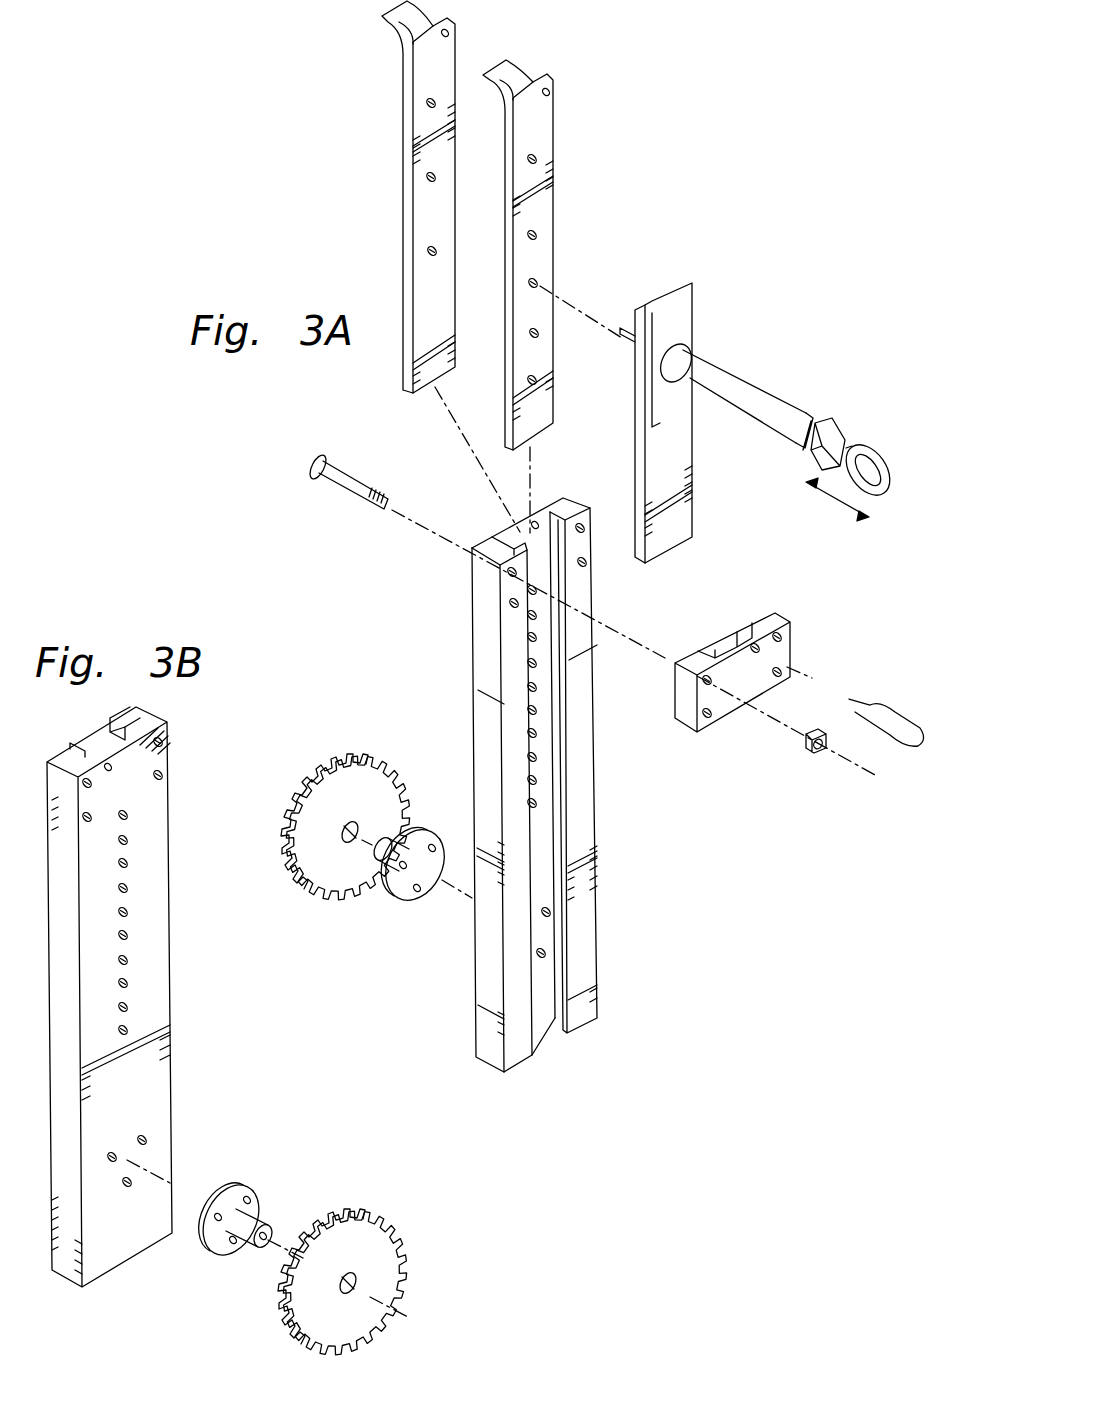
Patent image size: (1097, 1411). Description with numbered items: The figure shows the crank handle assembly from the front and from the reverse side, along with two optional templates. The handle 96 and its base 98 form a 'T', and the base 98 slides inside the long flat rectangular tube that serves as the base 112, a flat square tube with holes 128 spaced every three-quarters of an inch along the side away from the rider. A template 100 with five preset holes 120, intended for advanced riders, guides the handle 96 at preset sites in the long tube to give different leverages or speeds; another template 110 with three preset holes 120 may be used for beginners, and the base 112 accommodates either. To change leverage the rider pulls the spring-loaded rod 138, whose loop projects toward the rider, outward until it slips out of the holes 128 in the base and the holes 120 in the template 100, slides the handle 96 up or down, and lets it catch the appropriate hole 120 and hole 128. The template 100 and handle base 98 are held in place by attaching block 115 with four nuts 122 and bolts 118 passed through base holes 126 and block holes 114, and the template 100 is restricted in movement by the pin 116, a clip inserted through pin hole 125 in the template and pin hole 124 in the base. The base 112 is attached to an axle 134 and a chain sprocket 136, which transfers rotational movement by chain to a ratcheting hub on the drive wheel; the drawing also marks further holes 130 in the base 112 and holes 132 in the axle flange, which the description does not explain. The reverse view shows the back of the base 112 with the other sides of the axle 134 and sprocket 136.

In FIG. 3A, the handle 96 is at (752, 372).
In FIG. 3A, the base 98 is at (687, 318).
In FIG. 3A, the template 100 is at (545, 126).
In FIG. 3A, the template 110 is at (420, 62).
In FIG. 3A, the base 112 is at (585, 877).
In FIG. 3B, the base 112 is at (109, 997).
In FIG. 3A, the block holes 114 is at (781, 637).
In FIG. 3A, the block 115 is at (728, 655).
In FIG. 3A, the pin 116 is at (755, 646).
In FIG. 3A, the bolts 118 is at (811, 753).
In FIG. 3A, the preset holes 120 is at (427, 106).
In FIG. 3A, the nuts 122 is at (356, 480).
In FIG. 3A, the pin hole 124 is at (536, 522).
In FIG. 3B, the pin hole 124 is at (108, 764).
In FIG. 3A, the pin hole 125 is at (448, 32).
In FIG. 3A, the base holes 126 is at (585, 526).
In FIG. 3B, the base holes 126 is at (162, 776).
In FIG. 3A, the holes 128 is at (536, 672).
In FIG. 3B, the holes 128 is at (128, 841).
In FIG. 3A, the holes 130 is at (545, 952).
In FIG. 3B, the holes 130 is at (140, 1138).
In FIG. 3A, the holes 132 is at (417, 868).
In FIG. 3B, the holes 132 is at (246, 1196).
In FIG. 3A, the axle 134 is at (408, 897).
In FIG. 3B, the axle 134 is at (256, 1210).
In FIG. 3A, the chain sprocket 136 is at (389, 790).
In FIG. 3B, the chain sprocket 136 is at (386, 1255).
In FIG. 3A, the rod 138 is at (845, 440).